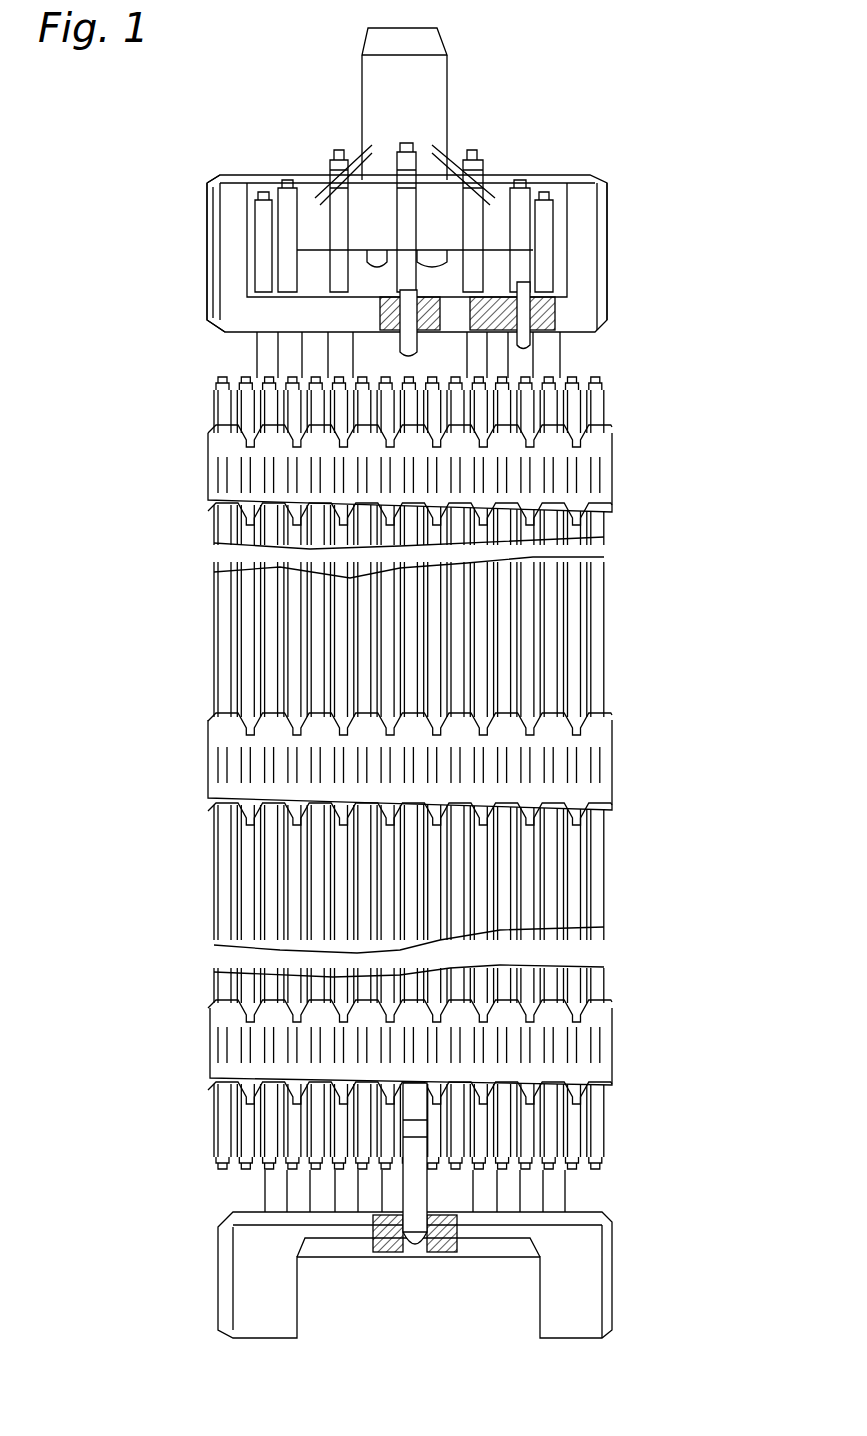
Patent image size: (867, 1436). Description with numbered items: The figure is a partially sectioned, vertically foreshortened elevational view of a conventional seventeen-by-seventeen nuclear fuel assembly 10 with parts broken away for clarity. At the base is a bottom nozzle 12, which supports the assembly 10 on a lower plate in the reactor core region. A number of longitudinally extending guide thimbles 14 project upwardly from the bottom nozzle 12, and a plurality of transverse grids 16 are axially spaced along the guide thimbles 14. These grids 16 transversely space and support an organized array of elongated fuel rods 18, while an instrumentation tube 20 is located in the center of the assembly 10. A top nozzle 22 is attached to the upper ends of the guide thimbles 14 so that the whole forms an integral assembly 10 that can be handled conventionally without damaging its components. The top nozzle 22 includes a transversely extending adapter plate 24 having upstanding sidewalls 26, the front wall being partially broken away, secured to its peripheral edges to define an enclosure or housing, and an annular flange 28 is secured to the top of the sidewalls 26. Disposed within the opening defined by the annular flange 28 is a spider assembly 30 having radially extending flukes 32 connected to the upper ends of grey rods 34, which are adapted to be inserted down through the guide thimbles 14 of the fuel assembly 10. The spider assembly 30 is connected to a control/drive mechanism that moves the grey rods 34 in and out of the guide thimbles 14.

The fuel assembly 10 is at (703, 423).
The bottom nozzle 12 is at (598, 1283).
The guide thimbles 14 is at (258, 355).
The transverse grids 16 is at (613, 480).
The fuel rods 18 is at (598, 403).
The instrumentation tube 20 is at (432, 1245).
The top nozzle 22 is at (426, 241).
The adapter plate 24 is at (428, 332).
The sidewalls 26 is at (607, 255).
The annular flange 28 is at (220, 175).
The spider assembly 30 is at (463, 99).
The flukes 32 is at (500, 198).
The grey rods 34 is at (533, 344).